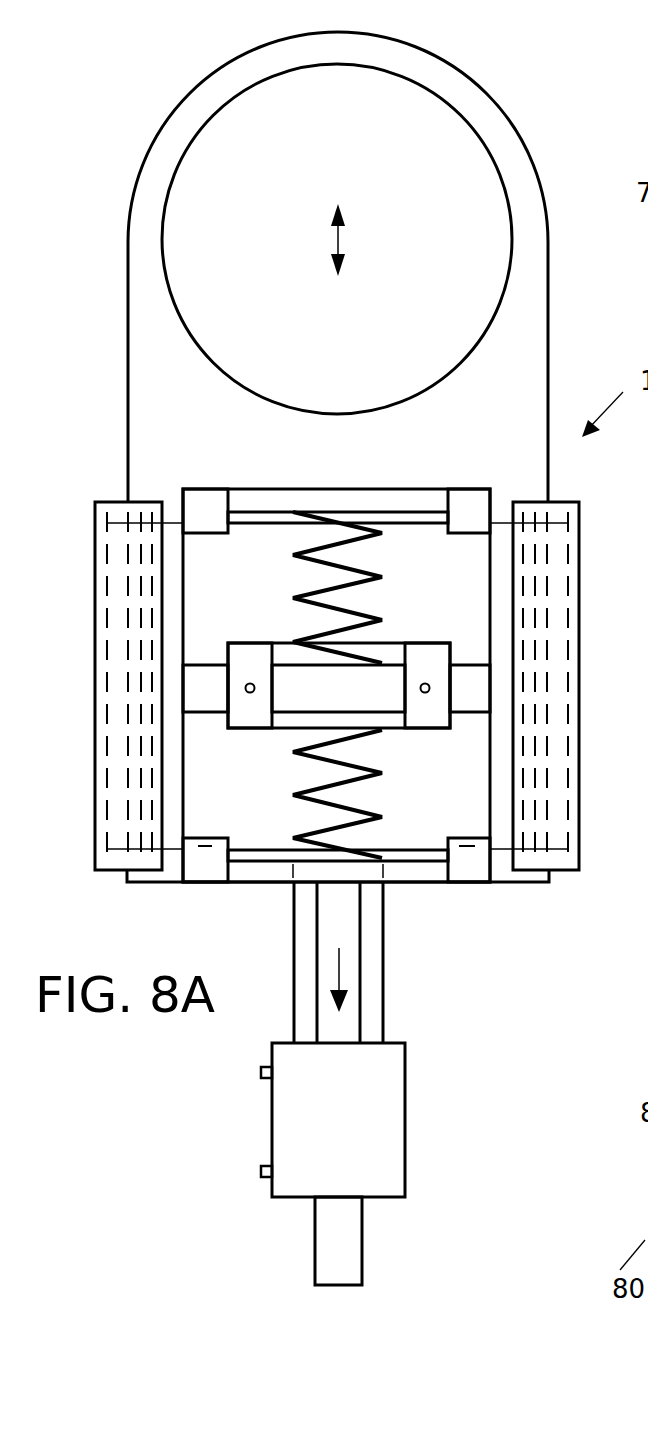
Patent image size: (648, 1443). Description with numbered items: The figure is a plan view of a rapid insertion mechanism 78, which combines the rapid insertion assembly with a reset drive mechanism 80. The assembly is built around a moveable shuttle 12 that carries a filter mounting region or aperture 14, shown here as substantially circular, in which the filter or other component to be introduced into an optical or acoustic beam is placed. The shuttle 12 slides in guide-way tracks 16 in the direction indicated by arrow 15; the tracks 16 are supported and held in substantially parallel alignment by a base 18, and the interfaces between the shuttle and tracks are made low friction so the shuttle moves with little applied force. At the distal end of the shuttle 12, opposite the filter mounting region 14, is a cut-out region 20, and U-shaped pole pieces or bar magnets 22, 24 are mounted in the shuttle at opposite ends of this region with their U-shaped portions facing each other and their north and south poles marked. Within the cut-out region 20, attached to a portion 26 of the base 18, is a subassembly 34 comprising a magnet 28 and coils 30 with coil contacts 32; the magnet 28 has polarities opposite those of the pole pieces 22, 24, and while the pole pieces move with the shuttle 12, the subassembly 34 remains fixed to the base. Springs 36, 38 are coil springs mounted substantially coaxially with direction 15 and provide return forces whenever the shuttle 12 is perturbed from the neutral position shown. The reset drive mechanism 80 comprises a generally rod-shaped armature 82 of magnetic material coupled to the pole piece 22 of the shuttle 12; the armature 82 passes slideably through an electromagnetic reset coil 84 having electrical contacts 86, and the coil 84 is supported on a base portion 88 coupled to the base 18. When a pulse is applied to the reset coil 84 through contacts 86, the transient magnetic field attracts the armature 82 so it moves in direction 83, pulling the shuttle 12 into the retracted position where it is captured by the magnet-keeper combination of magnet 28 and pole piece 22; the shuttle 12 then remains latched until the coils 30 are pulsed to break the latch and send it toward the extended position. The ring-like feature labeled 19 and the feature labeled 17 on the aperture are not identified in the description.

The moveable shuttle 12 is at (527, 368).
The filter mounting region or aperture 14 is at (337, 239).
The direction of shuttle motion 15 is at (338, 240).
The guide-way tracks 16 is at (110, 500).
The inner circle wall 17 is at (330, 412).
The base 18 is at (425, 850).
The outer ring 19 is at (338, 32).
The cut-out region 20 is at (336, 685).
The pole piece or bar magnet 22 is at (278, 870).
The pole piece or bar magnet 24 is at (303, 490).
The portion of base 26 is at (385, 645).
The magnet 28 is at (336, 688).
The coils 30 is at (245, 655).
The coil contacts 32 is at (248, 694).
The subassembly 34 is at (288, 620).
The spring 36 is at (360, 568).
The spring 38 is at (355, 780).
The rapid insertion mechanism 78 is at (92, 194).
The reset drive mechanism 80 is at (232, 1229).
The armature 82 is at (348, 1243).
The direction of armature movement 83 is at (339, 970).
The electromagnetic coil 84 is at (385, 1115).
The electrical contacts 86 is at (261, 1072).
The base portion 88 is at (375, 988).